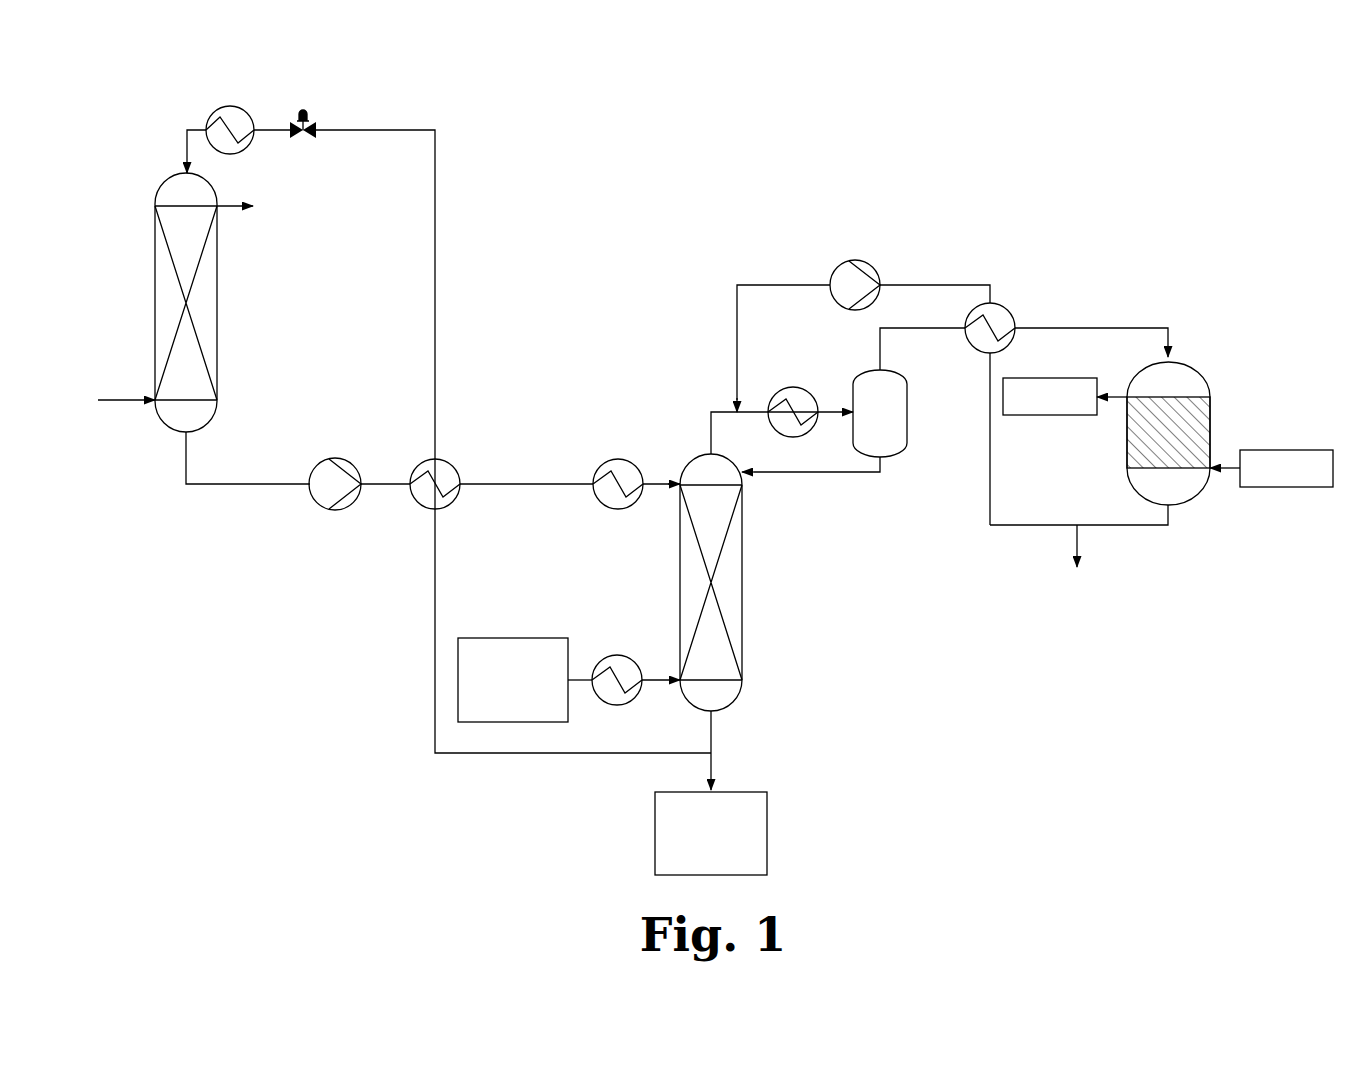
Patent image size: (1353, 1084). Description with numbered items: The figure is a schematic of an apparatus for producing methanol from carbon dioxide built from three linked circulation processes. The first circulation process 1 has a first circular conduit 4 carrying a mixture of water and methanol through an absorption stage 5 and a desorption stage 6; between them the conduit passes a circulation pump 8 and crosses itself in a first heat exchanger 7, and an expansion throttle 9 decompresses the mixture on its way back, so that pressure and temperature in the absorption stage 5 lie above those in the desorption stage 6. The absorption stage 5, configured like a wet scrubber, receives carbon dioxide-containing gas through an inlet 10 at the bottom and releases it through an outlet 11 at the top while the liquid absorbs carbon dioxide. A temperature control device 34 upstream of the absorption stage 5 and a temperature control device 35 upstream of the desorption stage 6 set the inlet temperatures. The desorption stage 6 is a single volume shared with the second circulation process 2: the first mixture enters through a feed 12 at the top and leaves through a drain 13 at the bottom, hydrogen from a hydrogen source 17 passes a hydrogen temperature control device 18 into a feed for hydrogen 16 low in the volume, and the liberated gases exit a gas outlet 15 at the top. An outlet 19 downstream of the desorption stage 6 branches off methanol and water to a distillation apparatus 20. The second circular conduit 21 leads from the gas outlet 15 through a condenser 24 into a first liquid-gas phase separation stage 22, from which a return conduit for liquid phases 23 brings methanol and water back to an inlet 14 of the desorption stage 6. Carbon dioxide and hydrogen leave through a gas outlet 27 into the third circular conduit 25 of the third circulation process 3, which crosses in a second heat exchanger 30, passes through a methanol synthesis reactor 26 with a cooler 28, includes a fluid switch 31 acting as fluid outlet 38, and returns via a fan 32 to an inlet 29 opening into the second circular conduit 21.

The first circulation process 1 is at (470, 332).
The second circulation process 2 is at (825, 523).
The third circulation process 3 is at (1057, 260).
The first circular conduit 4 is at (435, 328).
The absorption stage 5 is at (203, 300).
The desorption stage 6 is at (690, 583).
The first heat exchanger 7 is at (442, 477).
The circulation pump 8 is at (327, 492).
The expansion throttle 9 is at (310, 125).
The inlet 10 is at (125, 402).
The outlet 11 is at (233, 203).
The feed 12 is at (677, 482).
The drain 13 is at (713, 713).
The inlet 14 is at (760, 473).
The gas outlet 15 is at (708, 453).
The feed for hydrogen 16 is at (675, 668).
The hydrogen source 17 is at (525, 680).
The hydrogen temperature control device 18 is at (603, 663).
The outlet 19 is at (715, 770).
The distillation apparatus 20 is at (711, 833).
The second circular conduit 21 is at (752, 410).
The first liquid-gas phase separation stage 22 is at (880, 413).
The return conduit for liquid phases 23 is at (857, 473).
The condenser 24 is at (800, 397).
The third circular conduit 25 is at (1053, 327).
The methanol synthesis reactor 26 is at (1208, 413).
The gas outlet 27 is at (878, 370).
The cooler 28 is at (1060, 400).
The inlet 29 is at (852, 412).
The second heat exchanger 30 is at (983, 332).
The fluid switch 31 is at (1078, 527).
The fan 32 is at (853, 278).
The temperature control device 34 is at (237, 120).
The temperature control device 35 is at (607, 460).
The fluid outlet 38 is at (1072, 562).